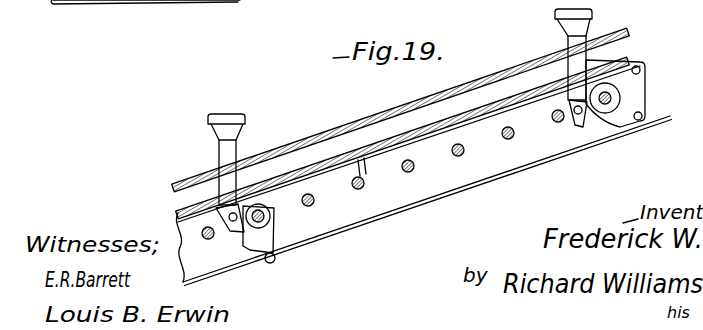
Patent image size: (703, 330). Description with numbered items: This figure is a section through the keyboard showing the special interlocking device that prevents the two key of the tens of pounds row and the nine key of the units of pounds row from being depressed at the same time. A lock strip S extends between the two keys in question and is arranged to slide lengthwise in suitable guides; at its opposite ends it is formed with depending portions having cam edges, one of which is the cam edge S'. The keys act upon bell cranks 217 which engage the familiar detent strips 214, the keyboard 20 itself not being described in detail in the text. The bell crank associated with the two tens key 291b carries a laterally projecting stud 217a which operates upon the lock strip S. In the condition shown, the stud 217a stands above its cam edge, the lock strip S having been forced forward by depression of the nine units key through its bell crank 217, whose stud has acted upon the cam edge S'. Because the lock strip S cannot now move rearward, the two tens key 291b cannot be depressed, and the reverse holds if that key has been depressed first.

The base plate 20 is at (178, 212).
The detent strip 214 is at (487, 178).
The bell crank 217 is at (617, 125).
The stud of bell crank 217a is at (215, 210).
The two tens key 291b is at (608, 20).
The lock strip S is at (401, 143).
The cam edge S' is at (409, 144).